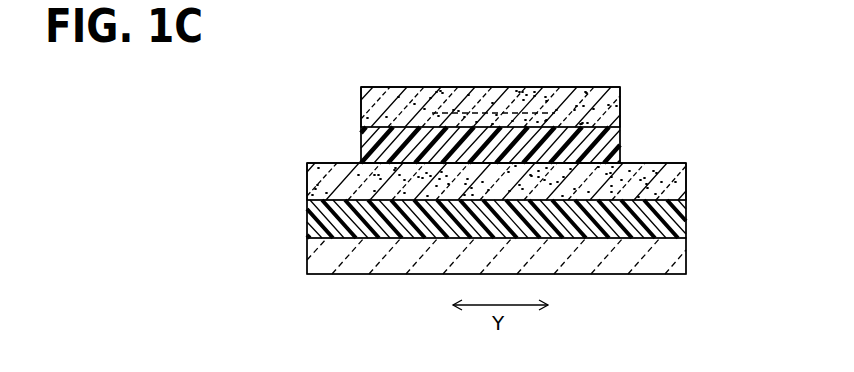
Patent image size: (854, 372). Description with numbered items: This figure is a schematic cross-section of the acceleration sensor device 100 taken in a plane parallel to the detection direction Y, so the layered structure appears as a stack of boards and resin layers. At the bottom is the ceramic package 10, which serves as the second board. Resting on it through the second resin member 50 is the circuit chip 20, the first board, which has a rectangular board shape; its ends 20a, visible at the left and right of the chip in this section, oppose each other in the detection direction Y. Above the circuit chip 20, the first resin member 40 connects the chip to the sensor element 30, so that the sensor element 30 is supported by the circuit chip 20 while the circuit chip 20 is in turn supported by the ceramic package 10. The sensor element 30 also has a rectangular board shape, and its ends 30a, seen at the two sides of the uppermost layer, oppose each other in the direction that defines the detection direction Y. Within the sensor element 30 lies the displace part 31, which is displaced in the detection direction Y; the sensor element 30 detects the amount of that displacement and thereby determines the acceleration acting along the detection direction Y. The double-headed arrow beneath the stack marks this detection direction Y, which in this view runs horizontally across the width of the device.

The acceleration sensor device 100 is at (361, 88).
The displace part 31 is at (483, 102).
The sensor element 30 is at (579, 100).
The ends of the sensor element 30a is at (620, 99).
The first resin member 40 is at (621, 131).
The circuit chip 20 is at (686, 164).
The ends of the circuit chip 20a is at (686, 182).
The second resin member 50 is at (686, 221).
The ceramic package 10 is at (678, 260).